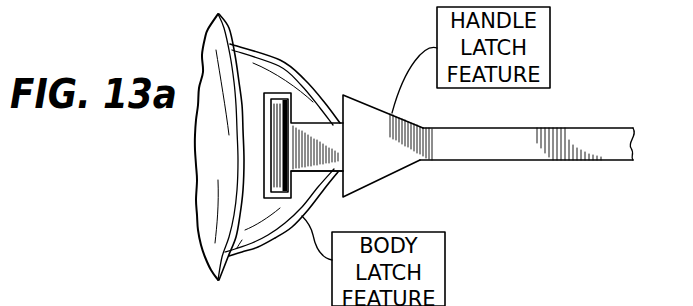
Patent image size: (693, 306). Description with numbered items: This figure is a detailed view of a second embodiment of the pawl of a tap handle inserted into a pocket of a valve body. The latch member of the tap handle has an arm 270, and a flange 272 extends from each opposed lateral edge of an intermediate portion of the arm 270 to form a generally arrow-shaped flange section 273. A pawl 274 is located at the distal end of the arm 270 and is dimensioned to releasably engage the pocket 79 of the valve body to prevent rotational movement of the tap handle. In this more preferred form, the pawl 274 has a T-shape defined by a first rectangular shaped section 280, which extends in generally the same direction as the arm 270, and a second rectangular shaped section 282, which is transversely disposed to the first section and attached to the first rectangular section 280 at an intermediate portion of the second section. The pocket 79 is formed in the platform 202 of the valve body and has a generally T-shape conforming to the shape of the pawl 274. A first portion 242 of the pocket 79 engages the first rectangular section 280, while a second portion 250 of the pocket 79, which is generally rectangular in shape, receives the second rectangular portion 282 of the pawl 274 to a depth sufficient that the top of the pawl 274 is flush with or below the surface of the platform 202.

The pocket 79 is at (294, 92).
The platform 202 is at (254, 245).
The first portion of the pocket 242 is at (333, 124).
The second portion of the pocket 250 is at (272, 92).
The arm 270 is at (515, 145).
The flange 272 is at (377, 158).
The arrow-shaped flange section 273 is at (375, 84).
The pawl 274 is at (283, 146).
The first rectangular shaped section 280 is at (318, 145).
The second rectangular shaped section 282 is at (283, 184).